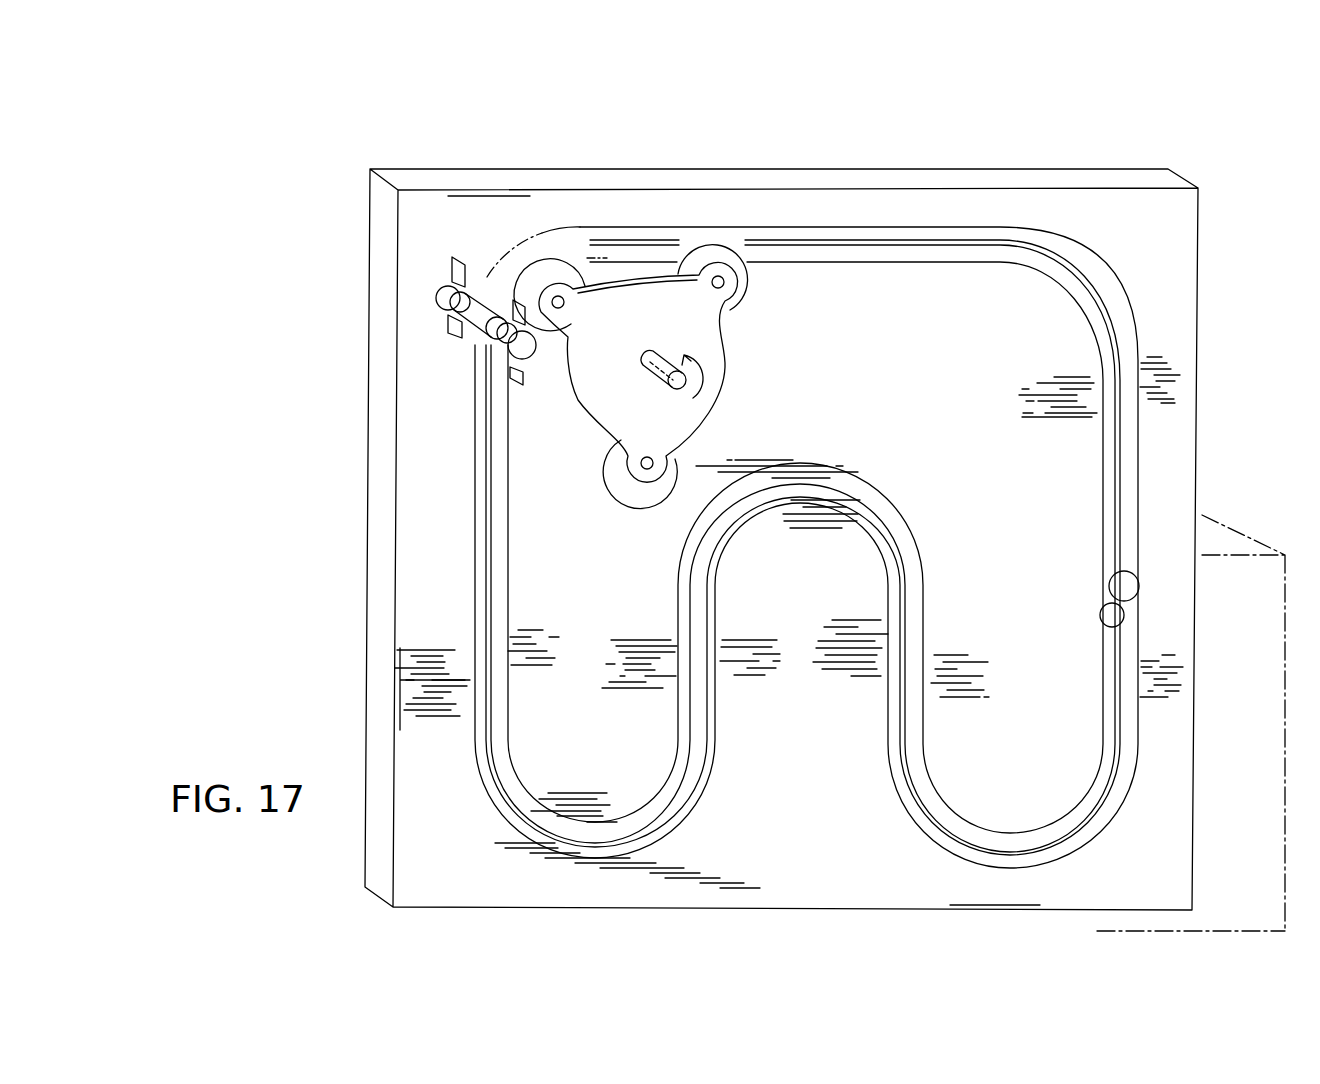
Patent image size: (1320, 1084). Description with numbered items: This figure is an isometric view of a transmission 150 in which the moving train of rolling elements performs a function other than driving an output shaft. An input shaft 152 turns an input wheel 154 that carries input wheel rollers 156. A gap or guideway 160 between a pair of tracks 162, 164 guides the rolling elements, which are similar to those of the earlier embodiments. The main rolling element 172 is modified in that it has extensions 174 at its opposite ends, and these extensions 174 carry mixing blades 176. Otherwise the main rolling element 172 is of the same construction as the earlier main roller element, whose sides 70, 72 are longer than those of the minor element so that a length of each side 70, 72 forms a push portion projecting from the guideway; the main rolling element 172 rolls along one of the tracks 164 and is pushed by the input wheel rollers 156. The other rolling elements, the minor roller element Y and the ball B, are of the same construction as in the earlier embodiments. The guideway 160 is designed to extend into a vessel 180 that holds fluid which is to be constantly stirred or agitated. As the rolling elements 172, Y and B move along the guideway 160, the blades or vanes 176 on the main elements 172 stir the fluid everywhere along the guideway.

The transmission 150 is at (586, 159).
The input shaft 152 is at (648, 373).
The input wheel 154 is at (727, 353).
The input wheel rollers 156 is at (702, 253).
The guideway 160 is at (880, 243).
The track 162 is at (927, 263).
The track 164 is at (1024, 230).
The main rolling element 172 is at (430, 290).
The side of main roller element 72 is at (462, 307).
The side of main roller element 70 is at (493, 338).
The extensions 174 is at (513, 333).
The mixing blades 176 is at (512, 350).
The vessel 180 is at (1147, 932).
The minor roller element Y is at (1141, 591).
The ball B is at (1126, 619).